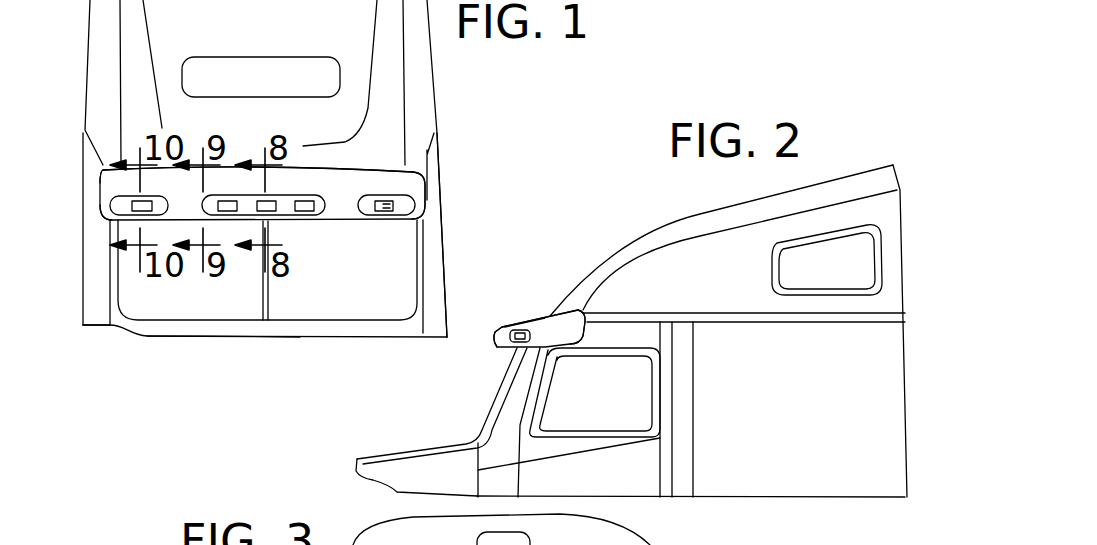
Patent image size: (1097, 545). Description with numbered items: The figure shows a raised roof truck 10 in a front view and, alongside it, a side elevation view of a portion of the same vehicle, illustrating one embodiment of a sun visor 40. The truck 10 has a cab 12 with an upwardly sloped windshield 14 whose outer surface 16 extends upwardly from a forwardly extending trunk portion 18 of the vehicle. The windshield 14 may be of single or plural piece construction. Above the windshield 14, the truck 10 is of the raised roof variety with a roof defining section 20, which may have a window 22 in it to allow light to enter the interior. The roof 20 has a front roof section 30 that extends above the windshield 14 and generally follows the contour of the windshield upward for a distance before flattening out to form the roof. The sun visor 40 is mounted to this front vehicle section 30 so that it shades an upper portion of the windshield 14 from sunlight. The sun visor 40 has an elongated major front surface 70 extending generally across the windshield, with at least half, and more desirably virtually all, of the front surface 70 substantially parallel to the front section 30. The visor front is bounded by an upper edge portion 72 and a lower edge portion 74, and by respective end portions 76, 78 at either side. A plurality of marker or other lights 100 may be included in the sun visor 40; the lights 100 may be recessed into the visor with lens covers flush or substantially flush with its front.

In FIG. 1, the truck 10 is at (463, 206).
In FIG. 2, the truck 10 is at (851, 164).
In FIG. 1, the cab 12 is at (108, 354).
In FIG. 2, the cab 12 is at (640, 485).
In FIG. 1, the windshield 14 is at (124, 280).
In FIG. 2, the windshield 14 is at (486, 403).
In FIG. 1, the outer surface 16 is at (312, 290).
In FIG. 2, the outer surface 16 is at (492, 418).
In FIG. 1, the trunk portion 18 is at (218, 319).
In FIG. 2, the trunk portion 18 is at (383, 447).
In FIG. 1, the roof defining section 20 is at (364, 91).
In FIG. 2, the roof defining section 20 is at (653, 215).
In FIG. 1, the window 22 is at (258, 66).
In FIG. 2, the front roof section 30 is at (544, 290).
In FIG. 1, the sun visor 40 is at (93, 186).
In FIG. 2, the sun visor 40 is at (577, 313).
In FIG. 2, the front surface 70 is at (498, 307).
In FIG. 1, the upper edge portion 72 is at (333, 180).
In FIG. 2, the upper edge portion 72 is at (520, 308).
In FIG. 1, the lower edge portion 74 is at (398, 213).
In FIG. 2, the lower edge portion 74 is at (498, 347).
In FIG. 1, the end portion 76 is at (102, 193).
In FIG. 1, the end portion 78 is at (423, 183).
In FIG. 2, the end portion 78 is at (563, 330).
In FIG. 1, the lights 100 is at (377, 208).